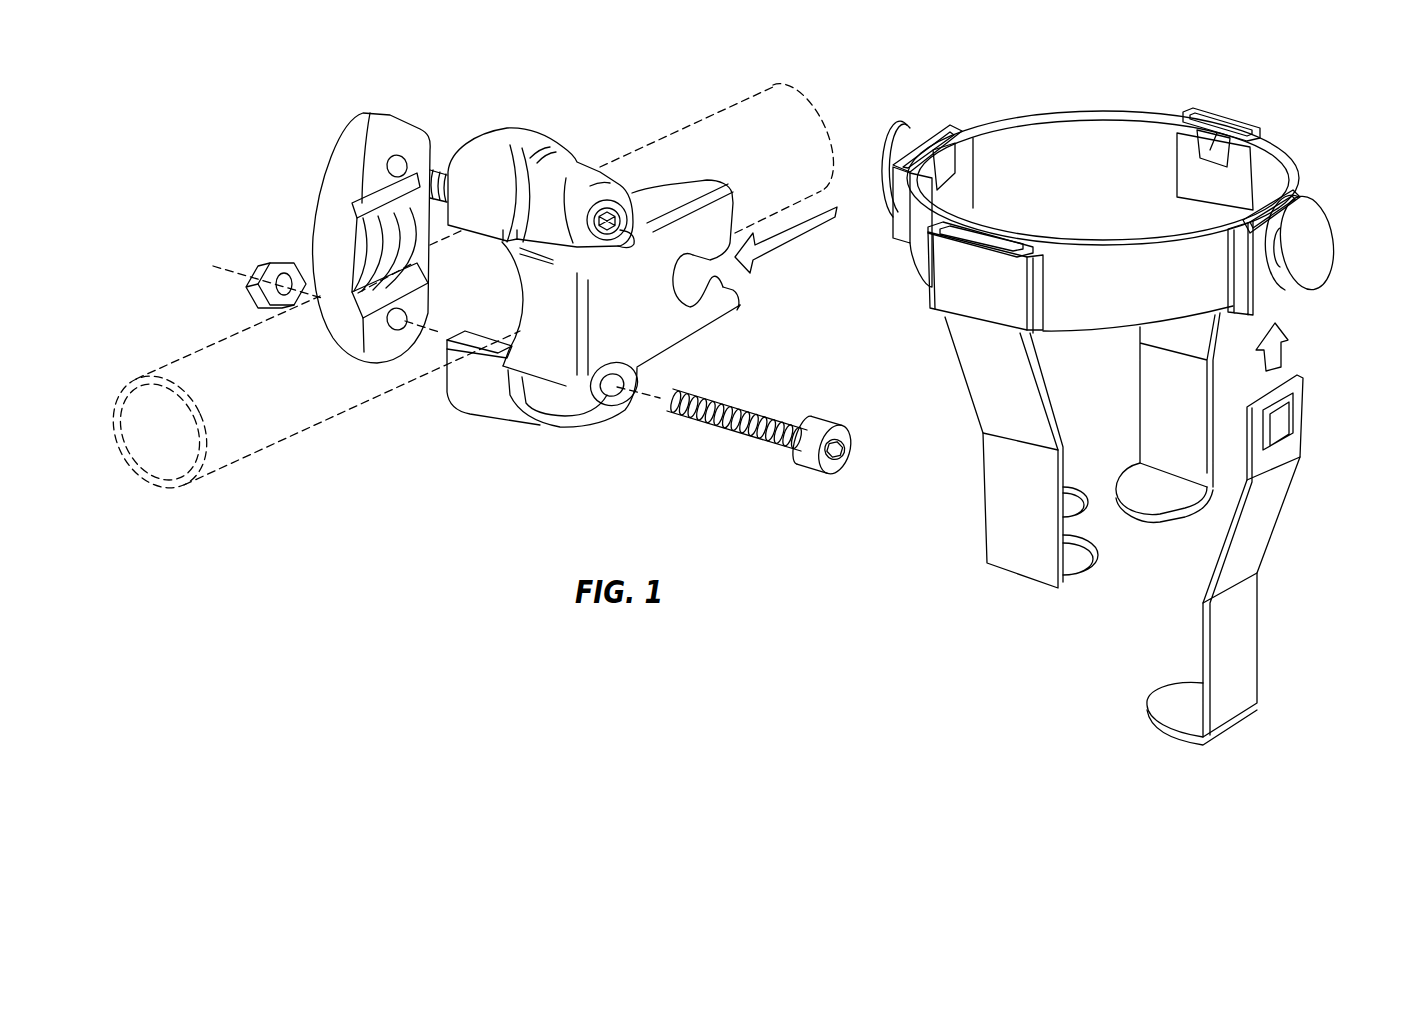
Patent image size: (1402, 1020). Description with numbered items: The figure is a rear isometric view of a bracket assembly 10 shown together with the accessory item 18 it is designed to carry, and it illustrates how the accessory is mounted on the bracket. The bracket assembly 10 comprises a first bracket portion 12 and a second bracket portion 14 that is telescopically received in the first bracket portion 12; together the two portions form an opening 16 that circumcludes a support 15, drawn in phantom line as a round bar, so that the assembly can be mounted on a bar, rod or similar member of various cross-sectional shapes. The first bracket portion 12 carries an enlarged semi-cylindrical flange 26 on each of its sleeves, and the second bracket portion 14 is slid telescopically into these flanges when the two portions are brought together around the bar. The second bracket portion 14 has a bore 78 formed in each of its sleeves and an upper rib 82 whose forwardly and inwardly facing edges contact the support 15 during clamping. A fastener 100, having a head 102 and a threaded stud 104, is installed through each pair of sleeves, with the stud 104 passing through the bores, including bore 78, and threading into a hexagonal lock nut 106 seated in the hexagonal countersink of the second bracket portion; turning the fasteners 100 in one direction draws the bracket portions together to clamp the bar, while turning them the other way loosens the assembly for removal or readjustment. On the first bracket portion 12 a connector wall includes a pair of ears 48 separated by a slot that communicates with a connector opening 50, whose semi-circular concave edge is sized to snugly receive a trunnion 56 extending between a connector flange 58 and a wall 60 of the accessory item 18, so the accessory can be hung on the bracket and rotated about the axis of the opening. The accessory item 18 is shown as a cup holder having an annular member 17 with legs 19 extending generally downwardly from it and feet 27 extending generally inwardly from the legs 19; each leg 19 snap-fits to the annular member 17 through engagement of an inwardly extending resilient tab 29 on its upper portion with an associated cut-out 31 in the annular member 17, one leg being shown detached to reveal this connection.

The bracket assembly 10 is at (578, 80).
The first bracket portion 12 is at (687, 353).
The second bracket portion 14 is at (345, 128).
The support 15 is at (223, 352).
The opening 16 is at (477, 293).
The annular member 17 is at (1133, 133).
The accessory item 18 is at (1041, 86).
The legs 19 is at (988, 497).
The semi-cylindrical flange 26 is at (508, 140).
The feet 27 is at (1075, 525).
The resilient tab 29 is at (1217, 135).
The cut-out 31 is at (950, 165).
The ears 48 is at (727, 217).
The connector opening 50 is at (685, 274).
The trunnion 56 is at (1273, 250).
The connector flange 58 is at (895, 140).
The wall 60 is at (945, 135).
The bore 78 is at (388, 165).
The upper rib 82 is at (348, 237).
The fastener 100 is at (769, 444).
The head 102 is at (830, 430).
The threaded stud 104 is at (697, 427).
The lock nut 106 is at (263, 261).